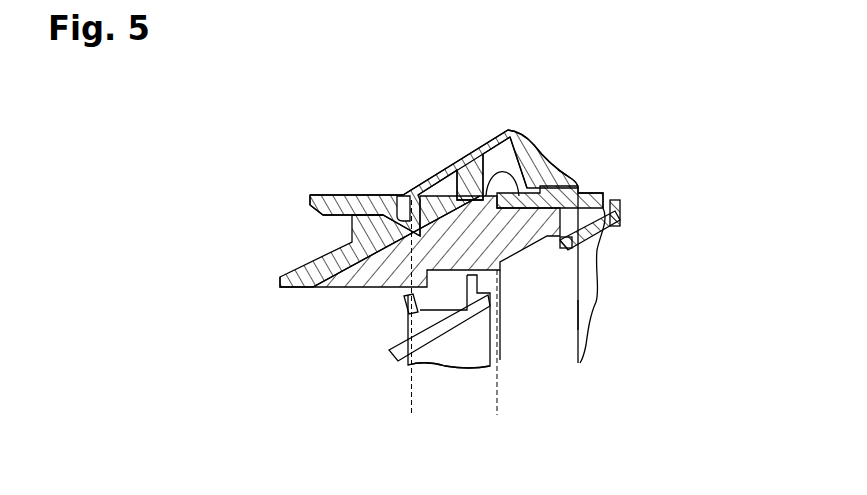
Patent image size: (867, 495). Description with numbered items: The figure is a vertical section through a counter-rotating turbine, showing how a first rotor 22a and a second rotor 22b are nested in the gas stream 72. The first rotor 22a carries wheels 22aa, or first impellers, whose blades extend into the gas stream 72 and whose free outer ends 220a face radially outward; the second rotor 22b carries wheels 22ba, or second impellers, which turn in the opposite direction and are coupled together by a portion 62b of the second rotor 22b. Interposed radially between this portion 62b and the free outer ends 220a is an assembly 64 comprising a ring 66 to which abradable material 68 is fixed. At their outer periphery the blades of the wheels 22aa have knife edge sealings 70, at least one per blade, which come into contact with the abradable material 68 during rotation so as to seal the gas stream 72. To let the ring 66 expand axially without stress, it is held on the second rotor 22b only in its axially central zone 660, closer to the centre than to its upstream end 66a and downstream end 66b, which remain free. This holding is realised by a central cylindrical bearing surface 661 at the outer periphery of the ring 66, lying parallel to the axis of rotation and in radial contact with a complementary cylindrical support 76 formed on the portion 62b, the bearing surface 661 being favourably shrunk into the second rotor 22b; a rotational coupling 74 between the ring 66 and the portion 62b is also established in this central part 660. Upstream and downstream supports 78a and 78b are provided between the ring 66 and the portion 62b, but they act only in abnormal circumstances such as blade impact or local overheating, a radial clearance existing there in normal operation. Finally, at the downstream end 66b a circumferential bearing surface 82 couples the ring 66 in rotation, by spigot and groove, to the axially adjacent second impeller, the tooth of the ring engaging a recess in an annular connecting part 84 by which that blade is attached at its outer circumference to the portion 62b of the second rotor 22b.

The second rotor 22b is at (452, 154).
The upstream support 78a is at (352, 192).
The central cylindrical bearing surface 661 is at (399, 216).
The cylindrical support 76 is at (461, 177).
The portion of the second rotor 62b is at (456, 180).
The rotational coupling 74 is at (488, 186).
The downstream support 78b is at (565, 176).
The downstream end of the ring 66b is at (581, 188).
The circumferential bearing surface 82 is at (613, 200).
The annular connecting part 84 is at (621, 209).
The abradable material 68 is at (528, 243).
The wheels of the second rotor 22ba is at (612, 296).
The ring 66 is at (339, 239).
The assembly 64 is at (418, 229).
The upstream end of the ring 66a is at (241, 287).
The free outer ends of the blades 220a is at (388, 300).
The knife edge sealing 70 is at (467, 290).
The gas stream 72 is at (252, 372).
The wheels of the first rotor 22aa is at (440, 367).
The first rotor 22a is at (506, 347).
The axially central part of the ring 660 is at (497, 418).